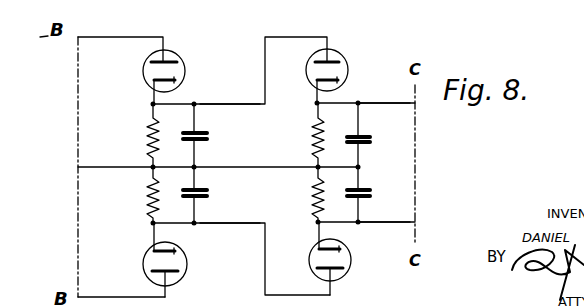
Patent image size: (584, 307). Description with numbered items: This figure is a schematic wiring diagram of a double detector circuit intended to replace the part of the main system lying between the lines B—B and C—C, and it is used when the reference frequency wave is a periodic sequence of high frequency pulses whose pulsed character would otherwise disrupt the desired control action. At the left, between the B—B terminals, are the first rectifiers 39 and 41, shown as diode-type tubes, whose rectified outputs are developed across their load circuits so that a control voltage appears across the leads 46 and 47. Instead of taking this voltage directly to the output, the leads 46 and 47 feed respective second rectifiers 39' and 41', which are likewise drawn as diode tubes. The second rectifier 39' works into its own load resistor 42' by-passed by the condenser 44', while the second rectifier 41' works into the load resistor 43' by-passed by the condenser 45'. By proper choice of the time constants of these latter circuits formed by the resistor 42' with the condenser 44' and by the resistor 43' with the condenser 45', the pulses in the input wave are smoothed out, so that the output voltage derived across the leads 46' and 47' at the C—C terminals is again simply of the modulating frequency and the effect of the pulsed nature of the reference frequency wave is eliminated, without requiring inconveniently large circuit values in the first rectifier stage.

The rectifier 39 is at (182, 71).
The second rectifier 39' is at (343, 67).
The rectifier 41 is at (182, 260).
The second rectifier 41' is at (346, 260).
The load resistor 42' is at (293, 135).
The load resistor 43' is at (293, 194).
The by-pass condenser 44' is at (375, 135).
The by-pass condenser 45' is at (372, 194).
The lead 46 is at (230, 92).
The lead 46' is at (385, 86).
The lead 47 is at (230, 238).
The lead 47' is at (385, 236).